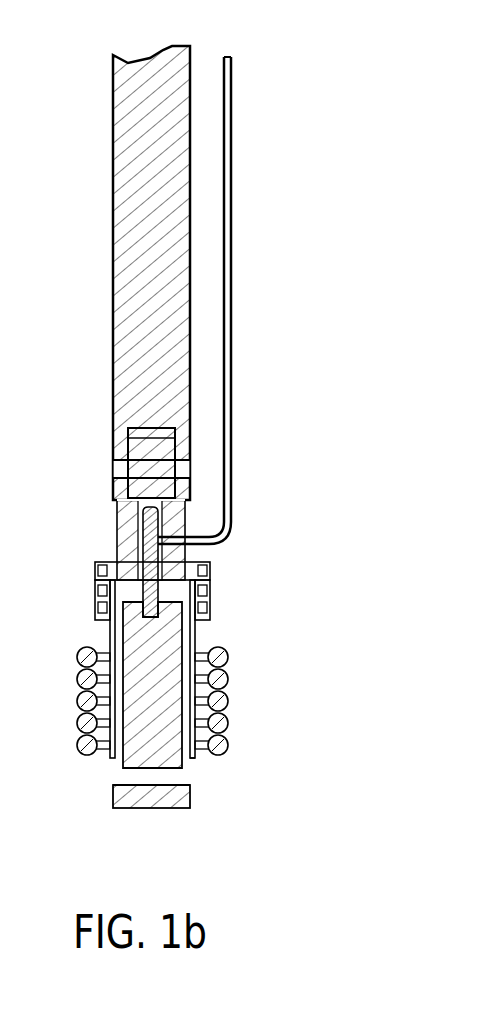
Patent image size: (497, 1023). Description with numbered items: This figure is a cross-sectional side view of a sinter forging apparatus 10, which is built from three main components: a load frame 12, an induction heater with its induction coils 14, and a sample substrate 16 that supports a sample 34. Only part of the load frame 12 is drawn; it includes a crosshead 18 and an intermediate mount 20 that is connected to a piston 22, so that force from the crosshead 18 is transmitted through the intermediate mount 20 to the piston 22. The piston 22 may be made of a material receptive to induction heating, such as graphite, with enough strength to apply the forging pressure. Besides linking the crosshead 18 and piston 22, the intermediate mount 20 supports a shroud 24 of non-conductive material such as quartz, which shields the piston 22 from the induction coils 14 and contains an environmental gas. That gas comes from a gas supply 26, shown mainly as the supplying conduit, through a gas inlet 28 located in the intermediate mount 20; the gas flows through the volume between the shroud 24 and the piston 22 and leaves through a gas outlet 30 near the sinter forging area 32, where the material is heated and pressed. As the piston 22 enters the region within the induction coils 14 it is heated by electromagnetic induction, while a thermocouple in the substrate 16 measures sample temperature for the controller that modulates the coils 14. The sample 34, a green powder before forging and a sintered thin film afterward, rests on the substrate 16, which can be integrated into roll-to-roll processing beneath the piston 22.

The apparatus 10 is at (333, 118).
The load frame 12 is at (107, 273).
The induction coils 14 is at (88, 718).
The sample substrate 16 is at (112, 797).
The crosshead 18 is at (132, 260).
The intermediate mount 20 is at (120, 517).
The piston 22 is at (142, 647).
The shroud 24 is at (203, 673).
The gas supply 26 is at (230, 308).
The gas inlet 28 is at (160, 528).
The gas outlet 30 is at (200, 768).
The sinter forging area 32 is at (130, 782).
The sample 34 is at (162, 784).